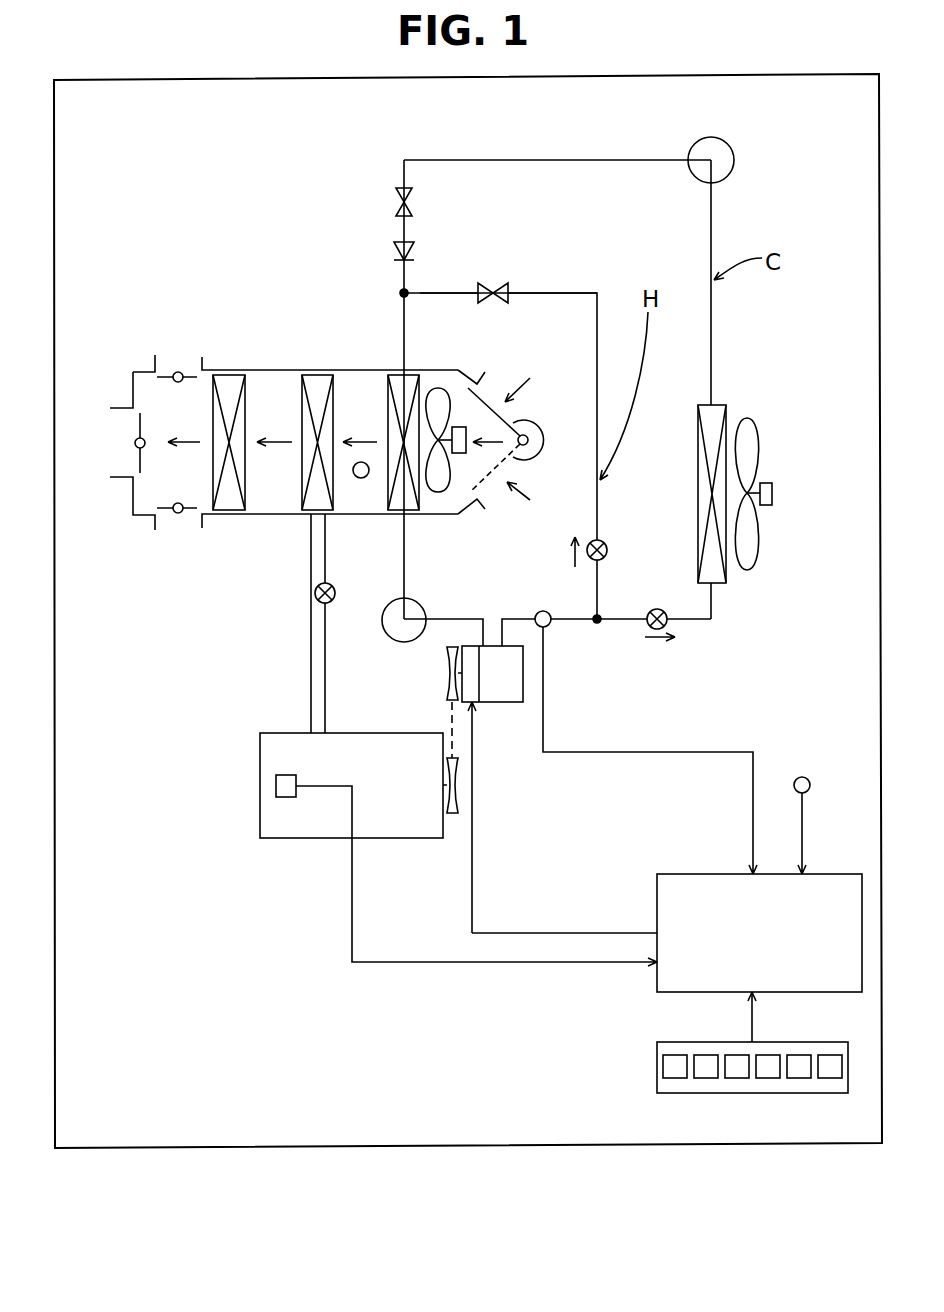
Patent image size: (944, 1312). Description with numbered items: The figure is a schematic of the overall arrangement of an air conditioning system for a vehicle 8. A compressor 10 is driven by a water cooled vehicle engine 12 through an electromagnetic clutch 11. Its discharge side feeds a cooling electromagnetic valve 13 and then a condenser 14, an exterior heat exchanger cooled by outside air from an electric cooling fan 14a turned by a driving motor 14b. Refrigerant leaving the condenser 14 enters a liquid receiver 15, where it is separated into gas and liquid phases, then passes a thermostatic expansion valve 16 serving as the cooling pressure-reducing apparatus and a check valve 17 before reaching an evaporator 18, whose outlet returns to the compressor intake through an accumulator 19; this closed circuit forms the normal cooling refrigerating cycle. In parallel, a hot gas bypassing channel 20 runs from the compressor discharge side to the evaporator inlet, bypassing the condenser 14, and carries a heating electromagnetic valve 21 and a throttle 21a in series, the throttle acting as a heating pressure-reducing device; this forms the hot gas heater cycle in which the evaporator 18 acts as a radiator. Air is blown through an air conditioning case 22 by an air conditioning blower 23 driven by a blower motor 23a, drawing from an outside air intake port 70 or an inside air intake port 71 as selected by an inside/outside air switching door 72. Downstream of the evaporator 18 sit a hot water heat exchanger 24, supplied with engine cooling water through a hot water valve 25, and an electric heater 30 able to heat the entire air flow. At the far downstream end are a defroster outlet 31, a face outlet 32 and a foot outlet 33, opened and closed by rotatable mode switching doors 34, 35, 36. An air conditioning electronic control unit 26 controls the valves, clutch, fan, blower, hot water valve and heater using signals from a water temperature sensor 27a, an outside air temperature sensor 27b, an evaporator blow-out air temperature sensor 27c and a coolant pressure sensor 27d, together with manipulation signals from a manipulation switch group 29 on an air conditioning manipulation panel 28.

The vehicle 8 is at (223, 1148).
The compressor 10 is at (508, 702).
The electromagnetic clutch 11 is at (447, 680).
The vehicle engine 12 is at (307, 838).
The cooling electromagnetic valve 13 is at (660, 608).
The condenser 14 is at (698, 447).
The electric cooling fan 14a is at (744, 418).
The driving motor 14b is at (766, 505).
The liquid receiver 15 is at (718, 138).
The thermostatic expansion valve 16 is at (396, 202).
The check valve 17 is at (393, 247).
The evaporator 18 is at (398, 388).
The accumulator 19 is at (422, 606).
The hot gas bypassing channel 20 is at (545, 293).
The heating electromagnetic valve 21 is at (606, 545).
The throttle 21a is at (488, 283).
The air conditioning case 22 is at (282, 370).
The air conditioning blower 23 is at (430, 388).
The blower motor 23a is at (463, 427).
The hot water heat exchanger 24 is at (330, 372).
The hot water valve 25 is at (313, 605).
The air conditioning electronic control unit 26 is at (657, 982).
The water temperature sensor 27a is at (276, 790).
The outside air temperature sensor 27b is at (802, 777).
The evaporator blow-out air temperature sensor 27c is at (361, 478).
The coolant pressure sensor 27d is at (548, 626).
The air conditioning manipulation panel 28 is at (722, 1093).
The manipulation switch group 29 is at (700, 1078).
The electric heater 30 is at (243, 372).
The defroster outlet 31 is at (168, 357).
The face outlet 32 is at (135, 430).
The foot outlet 33 is at (177, 525).
The mode switching door 34 is at (157, 385).
The mode switching door 35 is at (132, 457).
The mode switching door 36 is at (163, 507).
The outside air intake port 70 is at (517, 467).
The inside air intake port 71 is at (517, 408).
The inside/outside air switching door 72 is at (543, 433).